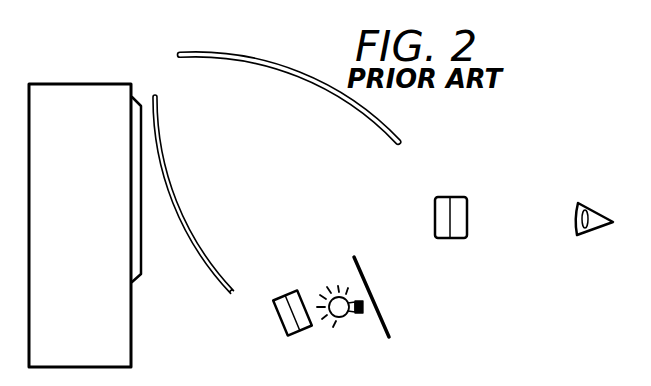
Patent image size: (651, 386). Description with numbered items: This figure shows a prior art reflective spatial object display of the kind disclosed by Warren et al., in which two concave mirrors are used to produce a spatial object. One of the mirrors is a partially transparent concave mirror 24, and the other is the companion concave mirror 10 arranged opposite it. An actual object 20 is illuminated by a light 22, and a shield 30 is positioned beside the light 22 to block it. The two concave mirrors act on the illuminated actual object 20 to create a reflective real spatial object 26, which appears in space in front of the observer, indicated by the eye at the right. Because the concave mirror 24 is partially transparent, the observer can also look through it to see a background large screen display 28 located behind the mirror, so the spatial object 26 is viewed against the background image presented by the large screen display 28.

The concave mirror 10 is at (306, 80).
The actual object 20 is at (279, 316).
The light 22 is at (349, 316).
The partially transparent concave mirror 24 is at (194, 243).
The reflective real spatial object 26 is at (455, 197).
The background large screen display 28 is at (133, 322).
The shield 30 is at (386, 320).